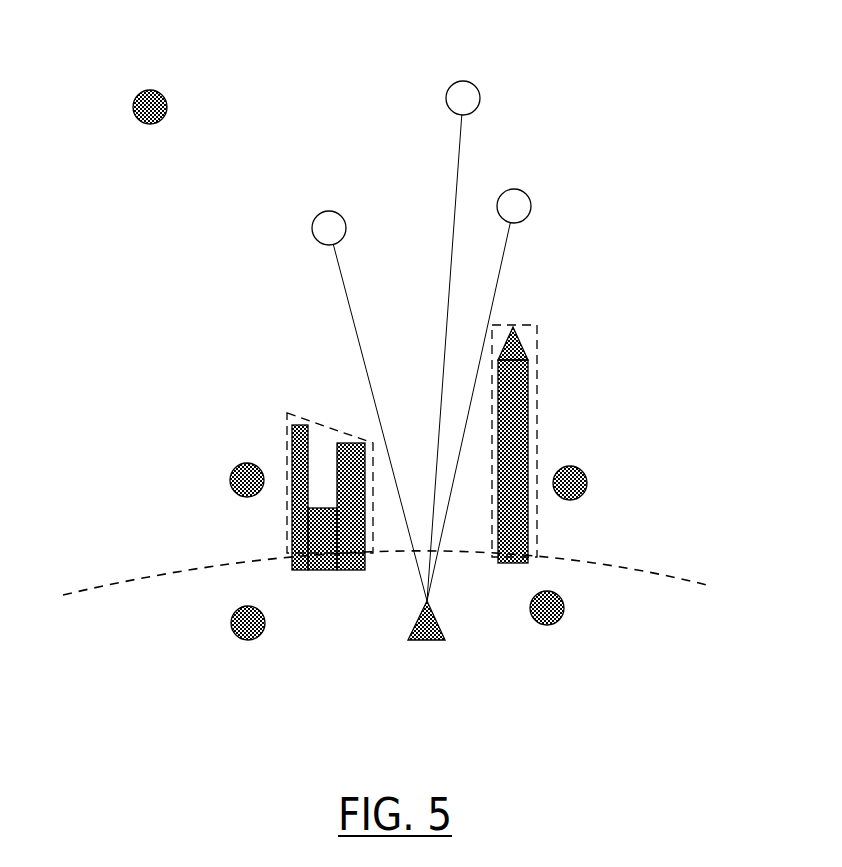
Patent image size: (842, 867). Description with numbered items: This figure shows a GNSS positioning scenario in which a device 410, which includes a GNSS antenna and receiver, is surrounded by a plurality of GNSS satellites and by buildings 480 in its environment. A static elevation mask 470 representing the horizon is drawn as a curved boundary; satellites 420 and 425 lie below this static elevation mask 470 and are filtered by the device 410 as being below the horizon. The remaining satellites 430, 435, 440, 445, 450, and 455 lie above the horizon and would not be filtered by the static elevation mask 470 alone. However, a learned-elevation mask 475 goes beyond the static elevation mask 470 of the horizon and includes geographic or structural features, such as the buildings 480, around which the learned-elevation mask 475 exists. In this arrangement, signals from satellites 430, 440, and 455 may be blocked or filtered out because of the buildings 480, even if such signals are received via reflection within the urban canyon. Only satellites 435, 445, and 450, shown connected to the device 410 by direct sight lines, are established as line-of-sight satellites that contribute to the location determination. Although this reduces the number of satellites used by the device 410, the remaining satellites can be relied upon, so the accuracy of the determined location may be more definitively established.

The device 410 is at (477, 658).
The satellite 420 is at (296, 658).
The satellite 425 is at (597, 642).
The satellite 430 is at (202, 456).
The satellite 435 is at (281, 203).
The satellite 440 is at (103, 83).
The satellite 445 is at (415, 73).
The satellite 450 is at (567, 180).
The satellite 455 is at (621, 459).
The static elevation mask 470 is at (434, 559).
The learned-elevation mask 475 is at (573, 431).
The buildings 480 is at (578, 445).